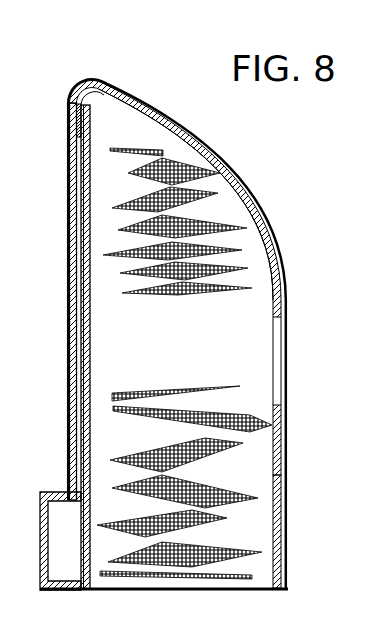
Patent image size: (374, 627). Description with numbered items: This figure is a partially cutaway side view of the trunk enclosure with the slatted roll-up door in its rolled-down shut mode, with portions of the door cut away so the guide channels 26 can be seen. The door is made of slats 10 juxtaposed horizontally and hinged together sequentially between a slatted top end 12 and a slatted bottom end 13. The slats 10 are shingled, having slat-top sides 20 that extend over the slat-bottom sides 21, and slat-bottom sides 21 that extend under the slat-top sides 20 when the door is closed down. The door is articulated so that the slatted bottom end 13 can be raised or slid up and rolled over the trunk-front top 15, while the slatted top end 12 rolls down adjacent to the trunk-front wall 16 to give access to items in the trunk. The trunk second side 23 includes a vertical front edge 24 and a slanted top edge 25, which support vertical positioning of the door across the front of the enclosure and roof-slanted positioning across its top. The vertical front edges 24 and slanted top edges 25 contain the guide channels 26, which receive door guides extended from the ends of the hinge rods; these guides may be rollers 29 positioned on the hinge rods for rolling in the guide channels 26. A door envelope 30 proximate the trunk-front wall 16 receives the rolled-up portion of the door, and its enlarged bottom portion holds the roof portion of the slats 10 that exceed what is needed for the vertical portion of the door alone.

The slats 10 is at (282, 458).
The slatted top end 12 is at (76, 124).
The slatted bottom end 13 is at (283, 582).
The trunk-front top 15 is at (84, 78).
The trunk-front wall 16 is at (82, 333).
The slat-top sides 20 is at (38, 301).
The slat-bottom sides 21 is at (34, 301).
The trunk second side 23 is at (198, 345).
The vertical front edges 24 is at (284, 488).
The slanted top edges 25 is at (172, 116).
The guide channels 26 is at (133, 95).
The rollers 29 is at (97, 101).
The door envelope 30 is at (73, 412).